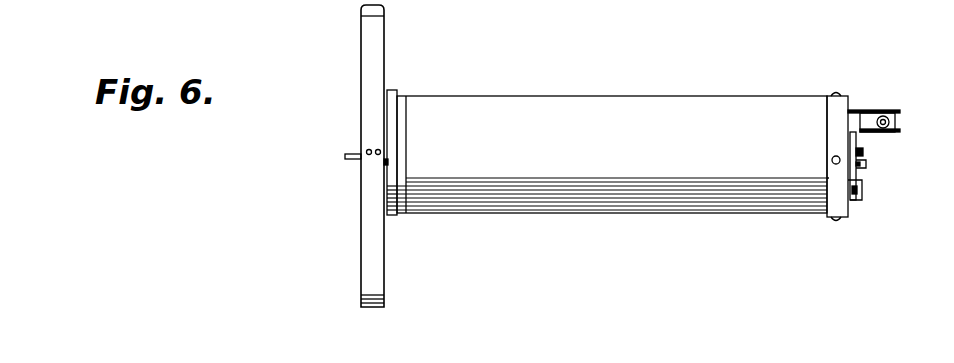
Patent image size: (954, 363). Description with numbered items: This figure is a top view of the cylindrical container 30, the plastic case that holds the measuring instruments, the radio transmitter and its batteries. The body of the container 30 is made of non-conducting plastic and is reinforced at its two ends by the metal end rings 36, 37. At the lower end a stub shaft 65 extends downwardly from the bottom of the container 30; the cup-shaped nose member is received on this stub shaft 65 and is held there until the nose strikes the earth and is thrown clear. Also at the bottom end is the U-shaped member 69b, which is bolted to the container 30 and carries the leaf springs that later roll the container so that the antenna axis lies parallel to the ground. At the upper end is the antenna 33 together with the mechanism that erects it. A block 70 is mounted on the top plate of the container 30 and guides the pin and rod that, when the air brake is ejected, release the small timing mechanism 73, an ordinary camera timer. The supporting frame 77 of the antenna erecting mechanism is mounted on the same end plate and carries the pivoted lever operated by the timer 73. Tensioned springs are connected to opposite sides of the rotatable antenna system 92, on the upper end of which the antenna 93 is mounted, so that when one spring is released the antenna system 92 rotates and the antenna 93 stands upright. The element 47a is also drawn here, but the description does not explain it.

The cylindrical container 30 is at (583, 89).
The metal end ring 37 is at (397, 215).
The stub shaft 65 is at (345, 156).
The U-shaped member 69b is at (387, 164).
The metal end ring 36 is at (847, 98).
The antenna 33 is at (889, 113).
The supporting frame 77 is at (871, 110).
The antenna 93 is at (895, 123).
The rotatable antenna system 92 is at (896, 131).
The timing mechanism 73 is at (864, 152).
The latch member 47a is at (866, 164).
The block 70 is at (860, 187).